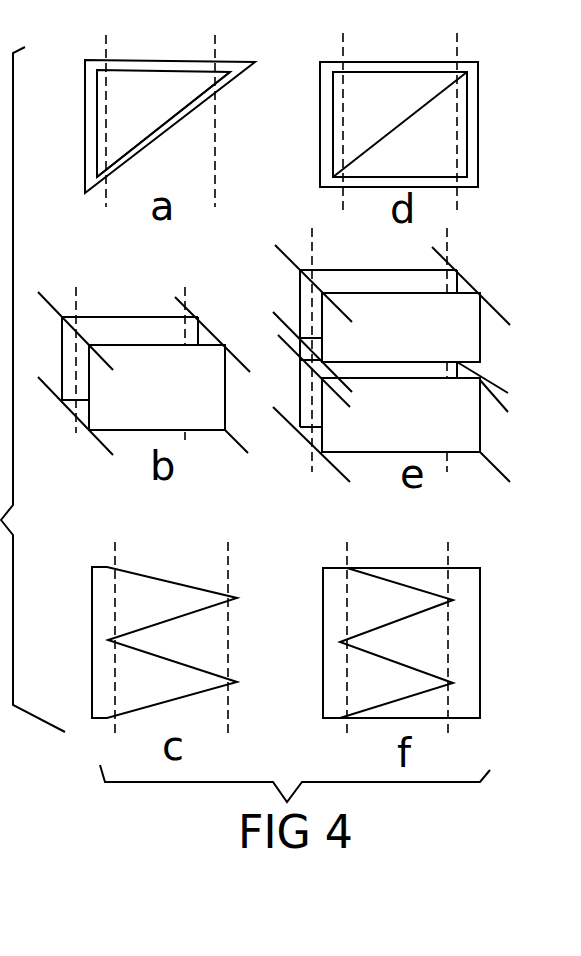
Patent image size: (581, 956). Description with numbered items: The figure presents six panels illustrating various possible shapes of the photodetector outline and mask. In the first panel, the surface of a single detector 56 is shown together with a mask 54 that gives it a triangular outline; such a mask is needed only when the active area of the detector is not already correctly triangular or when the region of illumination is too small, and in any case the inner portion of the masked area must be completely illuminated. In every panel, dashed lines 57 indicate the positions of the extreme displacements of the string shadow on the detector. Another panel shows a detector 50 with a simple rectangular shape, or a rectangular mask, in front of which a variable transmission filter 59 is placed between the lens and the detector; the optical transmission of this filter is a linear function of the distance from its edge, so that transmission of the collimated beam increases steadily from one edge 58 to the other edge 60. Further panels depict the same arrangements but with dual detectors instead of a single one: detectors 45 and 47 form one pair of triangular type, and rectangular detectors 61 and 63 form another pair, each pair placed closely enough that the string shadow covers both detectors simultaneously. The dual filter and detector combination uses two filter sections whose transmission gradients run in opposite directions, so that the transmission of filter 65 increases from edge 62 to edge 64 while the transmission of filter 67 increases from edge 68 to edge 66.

The detector 45 is at (357, 88).
The detector 47 is at (378, 157).
The detector 50 is at (142, 327).
The mask 54 is at (90, 80).
The detector 56 is at (173, 98).
The dashed lines 57 is at (100, 203).
The edge 58 is at (88, 367).
The variable transmission filter 59 is at (200, 418).
The edge 60 is at (226, 430).
The detector 61 is at (437, 280).
The edge 62 is at (320, 308).
The detector 63 is at (298, 382).
The edge 64 is at (480, 323).
The filter 65 is at (463, 325).
The edge 66 is at (313, 446).
The filter 67 is at (453, 438).
The edge 68 is at (480, 450).